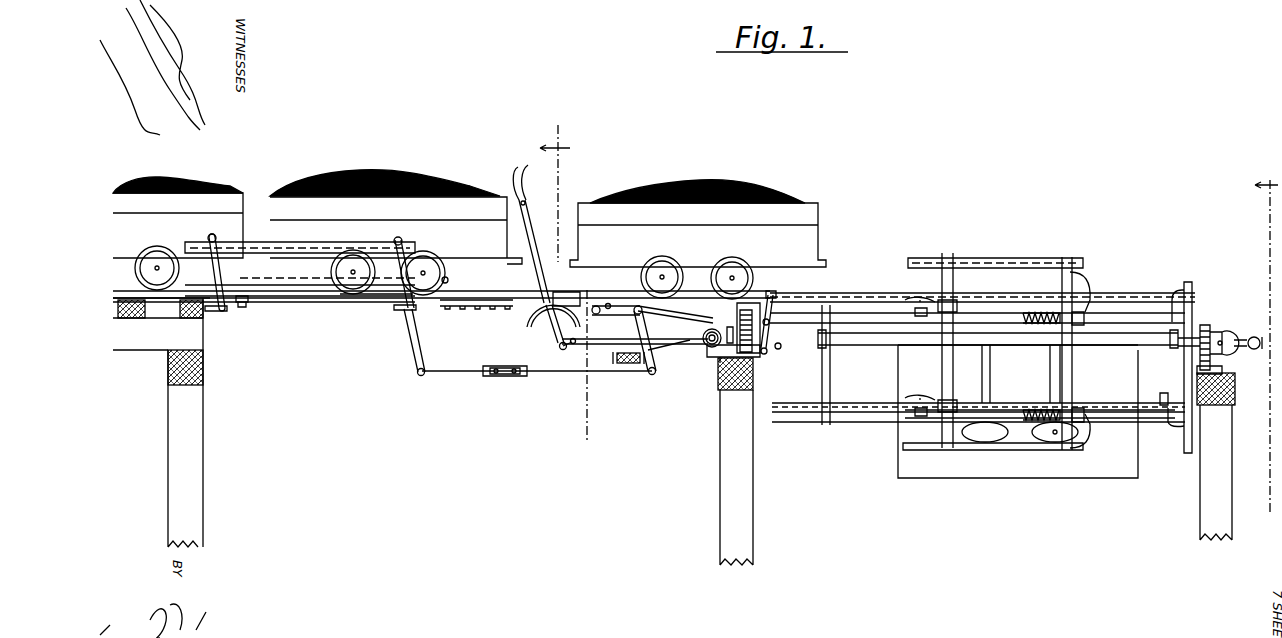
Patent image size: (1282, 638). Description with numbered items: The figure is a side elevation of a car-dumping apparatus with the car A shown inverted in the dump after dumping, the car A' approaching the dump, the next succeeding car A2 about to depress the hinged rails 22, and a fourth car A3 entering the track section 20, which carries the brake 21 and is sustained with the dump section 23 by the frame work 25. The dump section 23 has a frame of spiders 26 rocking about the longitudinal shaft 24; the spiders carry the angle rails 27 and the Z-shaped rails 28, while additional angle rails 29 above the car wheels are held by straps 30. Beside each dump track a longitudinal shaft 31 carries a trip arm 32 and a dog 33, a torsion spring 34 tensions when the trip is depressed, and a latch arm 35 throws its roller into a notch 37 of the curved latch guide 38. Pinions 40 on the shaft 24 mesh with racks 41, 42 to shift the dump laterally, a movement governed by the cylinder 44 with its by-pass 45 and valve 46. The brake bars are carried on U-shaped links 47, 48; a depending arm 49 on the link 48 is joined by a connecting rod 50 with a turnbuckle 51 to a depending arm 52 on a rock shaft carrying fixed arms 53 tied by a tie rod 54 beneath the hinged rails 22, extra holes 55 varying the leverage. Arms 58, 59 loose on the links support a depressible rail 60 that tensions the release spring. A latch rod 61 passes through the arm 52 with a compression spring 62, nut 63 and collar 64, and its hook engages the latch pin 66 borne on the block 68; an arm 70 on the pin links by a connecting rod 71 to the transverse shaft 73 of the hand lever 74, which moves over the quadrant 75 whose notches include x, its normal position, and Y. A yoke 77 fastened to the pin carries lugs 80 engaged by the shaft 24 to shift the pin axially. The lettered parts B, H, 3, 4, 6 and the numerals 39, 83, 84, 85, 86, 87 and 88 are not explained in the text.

The fourth car A3 is at (178, 217).
The next succeeding car A2 is at (396, 217).
The approaching car A' is at (698, 223).
The inverted car A is at (1018, 422).
The track guard B is at (512, 239).
The track section 20 is at (342, 300).
The brake 21 is at (280, 250).
The hinged rails 22 is at (513, 306).
The dump section 23 is at (1137, 300).
The longitudinal shaft 24 is at (890, 345).
The frame work 25 is at (1202, 523).
The spider 26 is at (822, 378).
The angle rails 27 is at (790, 318).
The Z-shaped rails 28 is at (840, 302).
The additional angle rails 29 is at (1015, 258).
The straps 30 is at (943, 362).
The longitudinal shaft 31 is at (920, 310).
The trip arm 32 is at (955, 302).
The dog 33 is at (1087, 300).
The torsion spring 34 is at (1062, 412).
The latch arm 35 is at (1180, 305).
The notch 37 is at (1064, 310).
The latch guide 38 is at (1188, 453).
The spring 39 is at (1028, 312).
The pinions 40 is at (744, 309).
The rack 41 is at (730, 392).
The rack 42 is at (1220, 363).
The cylinder 44 is at (1212, 333).
The by-pass 45 is at (1232, 333).
The valve 46 is at (1256, 350).
The U-shaped link 47 is at (210, 268).
The U-shaped link 48 is at (408, 250).
The depending arm 49 is at (412, 328).
The connecting rod 50 is at (455, 372).
The turnbuckle 51 is at (510, 376).
The depending arm 52 is at (637, 306).
The fixed arms 53 is at (618, 316).
The tie rod 54 is at (597, 314).
The holes 55 is at (607, 303).
The arm 58 is at (246, 301).
The second arm 59 is at (447, 279).
The depressible rail 60 is at (292, 286).
The latch rod 61 is at (664, 347).
The compression spring 62 is at (630, 361).
The nut 63 is at (617, 355).
The collar 64 is at (654, 372).
The latch pin 66 is at (707, 345).
The block 68 is at (718, 358).
The arm 70 is at (706, 334).
The connecting rod 71 is at (682, 310).
The transverse shaft 73 is at (556, 338).
The hand lever 74 is at (540, 272).
The quadrant 75 is at (538, 325).
The yoke 77 is at (720, 357).
The lugs 80 is at (728, 327).
The pivot 83 is at (566, 350).
The bar 84 is at (640, 341).
The pin 85 is at (772, 356).
The pin 86 is at (780, 348).
The lever 87 is at (765, 314).
The block 88 is at (777, 286).
The bracket 3 is at (575, 294).
The section line 4 is at (566, 124).
The section line 6 is at (1266, 339).
The notch Y is at (563, 293).
The point H is at (550, 321).
The notch x is at (552, 325).